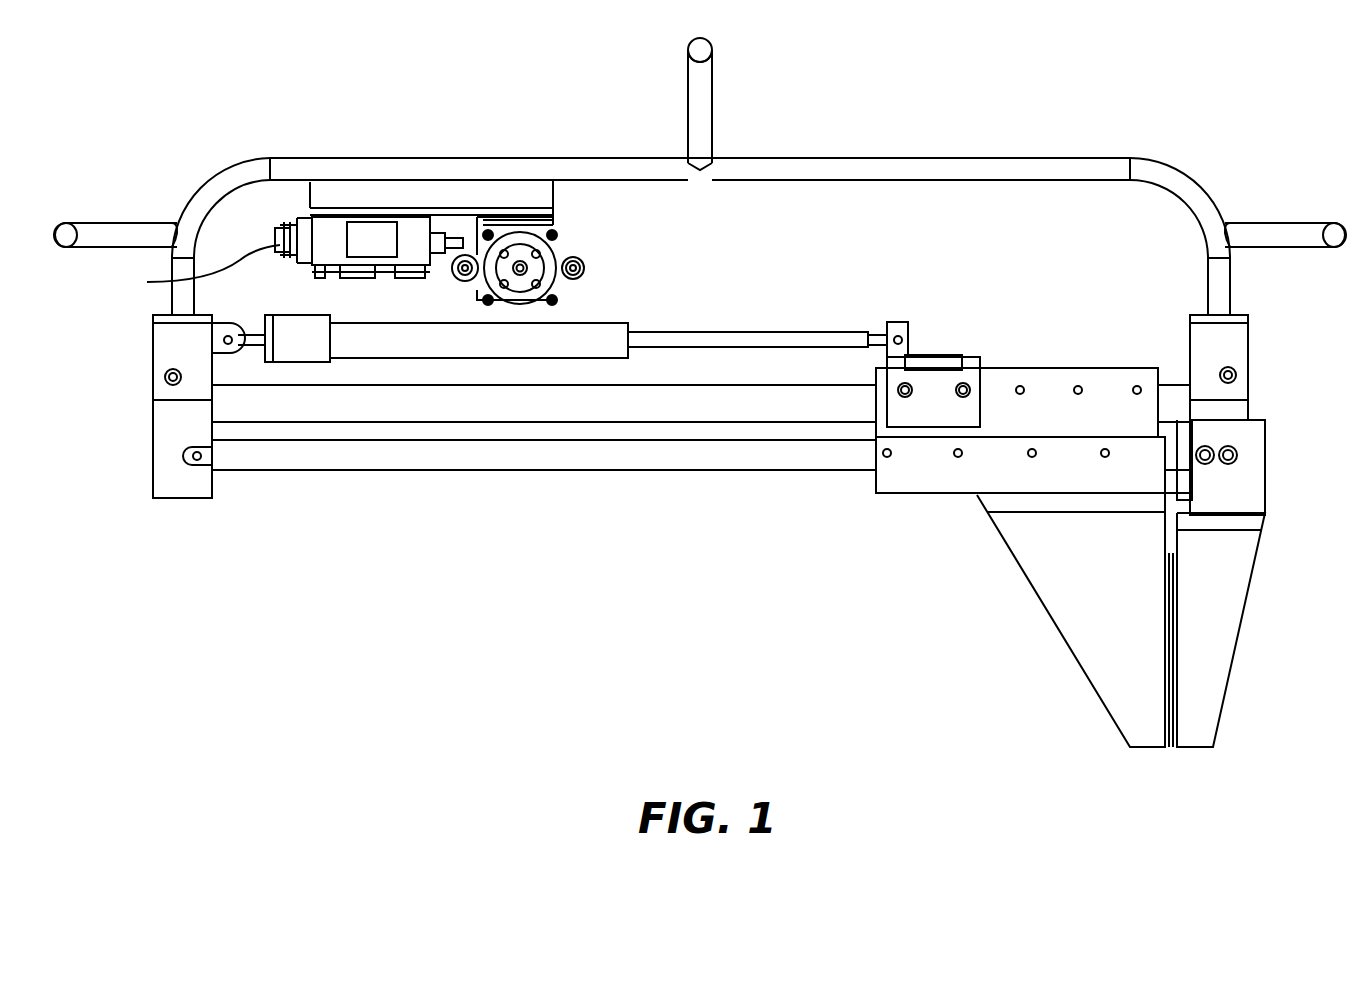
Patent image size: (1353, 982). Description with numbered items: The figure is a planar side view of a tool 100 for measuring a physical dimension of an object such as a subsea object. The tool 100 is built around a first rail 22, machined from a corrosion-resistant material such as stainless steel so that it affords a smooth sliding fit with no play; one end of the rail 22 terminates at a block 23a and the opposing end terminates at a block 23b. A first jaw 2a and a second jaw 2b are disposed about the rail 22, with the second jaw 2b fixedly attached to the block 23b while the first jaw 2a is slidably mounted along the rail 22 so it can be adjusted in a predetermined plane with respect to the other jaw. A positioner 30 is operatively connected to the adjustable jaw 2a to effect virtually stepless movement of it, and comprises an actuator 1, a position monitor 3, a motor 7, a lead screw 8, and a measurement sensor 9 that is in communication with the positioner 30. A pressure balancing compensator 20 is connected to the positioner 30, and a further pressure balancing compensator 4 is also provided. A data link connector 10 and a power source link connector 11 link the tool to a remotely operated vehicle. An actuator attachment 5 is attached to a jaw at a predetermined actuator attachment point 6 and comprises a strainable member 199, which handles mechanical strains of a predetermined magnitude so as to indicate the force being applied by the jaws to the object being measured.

The tool 100 is at (1085, 120).
The power source link connector 11 is at (286, 223).
The position monitor 3 is at (350, 233).
The positioner 30 is at (412, 320).
The data link connector 10 is at (152, 282).
The measurement sensor 9 is at (598, 318).
The pressure balancing compensator 4 is at (808, 306).
The strainable member 199 is at (937, 355).
The actuator attachment 5 is at (975, 357).
The actuator attachment point 6 is at (1020, 388).
The motor 7 is at (292, 358).
The actuator 1 is at (400, 343).
The lead screw 8 is at (454, 355).
The pressure balancing compensator 20 is at (632, 407).
The first rail 22 is at (758, 462).
The block 23a is at (188, 499).
The block 23b is at (893, 497).
The first jaw 2a is at (1080, 605).
The second jaw 2b is at (1228, 607).